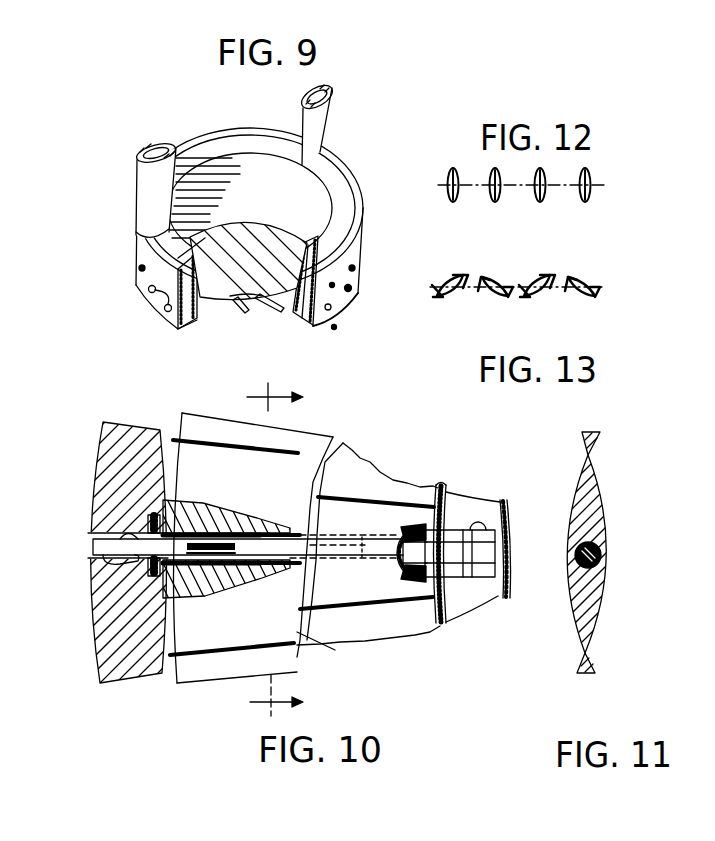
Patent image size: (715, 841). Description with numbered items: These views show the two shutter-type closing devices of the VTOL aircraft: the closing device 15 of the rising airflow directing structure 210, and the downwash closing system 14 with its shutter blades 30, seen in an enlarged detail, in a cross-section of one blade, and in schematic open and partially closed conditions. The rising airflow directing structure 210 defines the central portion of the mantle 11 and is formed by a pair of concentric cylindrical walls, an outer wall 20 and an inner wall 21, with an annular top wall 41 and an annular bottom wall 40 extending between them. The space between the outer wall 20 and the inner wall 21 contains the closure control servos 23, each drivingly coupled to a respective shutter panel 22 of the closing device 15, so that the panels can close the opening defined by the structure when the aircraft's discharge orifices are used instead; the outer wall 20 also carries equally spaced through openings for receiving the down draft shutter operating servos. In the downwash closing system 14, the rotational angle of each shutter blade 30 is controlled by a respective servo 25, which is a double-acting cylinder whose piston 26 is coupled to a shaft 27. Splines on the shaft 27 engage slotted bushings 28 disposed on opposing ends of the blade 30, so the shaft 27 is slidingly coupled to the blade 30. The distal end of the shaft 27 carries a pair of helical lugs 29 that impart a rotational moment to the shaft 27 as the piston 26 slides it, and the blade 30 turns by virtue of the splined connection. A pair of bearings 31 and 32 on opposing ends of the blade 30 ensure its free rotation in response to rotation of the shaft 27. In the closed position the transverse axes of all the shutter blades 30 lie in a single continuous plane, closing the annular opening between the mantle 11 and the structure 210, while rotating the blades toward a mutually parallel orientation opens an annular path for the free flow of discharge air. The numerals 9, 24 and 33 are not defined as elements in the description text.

In FIG. 9, the tubes 9 is at (312, 128).
In FIG. 9, the annular top wall 41 is at (335, 165).
In FIG. 9, the outer cylindrical wall 20 is at (138, 267).
In FIG. 10, the outer cylindrical wall 20 is at (447, 489).
In FIG. 9, the inner cylindrical wall 21 is at (230, 234).
In FIG. 10, the inner cylindrical wall 21 is at (504, 511).
In FIG. 9, the shutter panel 22 is at (253, 300).
In FIG. 9, the closure control servo 23 is at (300, 327).
In FIG. 9, the rivet holes 24 is at (149, 291).
In FIG. 10, the rivet holes 24 is at (414, 598).
In FIG. 9, the annular bottom wall 40 is at (197, 330).
In FIG. 9, the closing device 15 is at (233, 325).
In FIG. 9, the rising airflow directing structure 210 is at (334, 328).
In FIG. 10, the mantle 11 is at (155, 697).
In FIG. 10, the downwash closing system 14 is at (366, 450).
In FIG. 10, the helical lug 29 is at (122, 538).
In FIG. 10, the shaft 27 is at (264, 544).
In FIG. 11, the shaft 27 is at (605, 562).
In FIG. 10, the slotted bushing 28 is at (238, 565).
In FIG. 10, the bearing 31 is at (192, 583).
In FIG. 10, the bearing 32 is at (418, 572).
In FIG. 10, the servo 25 is at (497, 537).
In FIG. 10, the piston 26 is at (500, 555).
In FIG. 10, the lug 33 is at (444, 523).
In FIG. 10, the shutter blade 30 is at (355, 590).
In FIG. 11, the shutter blade 30 is at (602, 433).
In FIG. 12, the shutter blade 30 is at (495, 202).
In FIG. 13, the shutter blade 30 is at (485, 296).